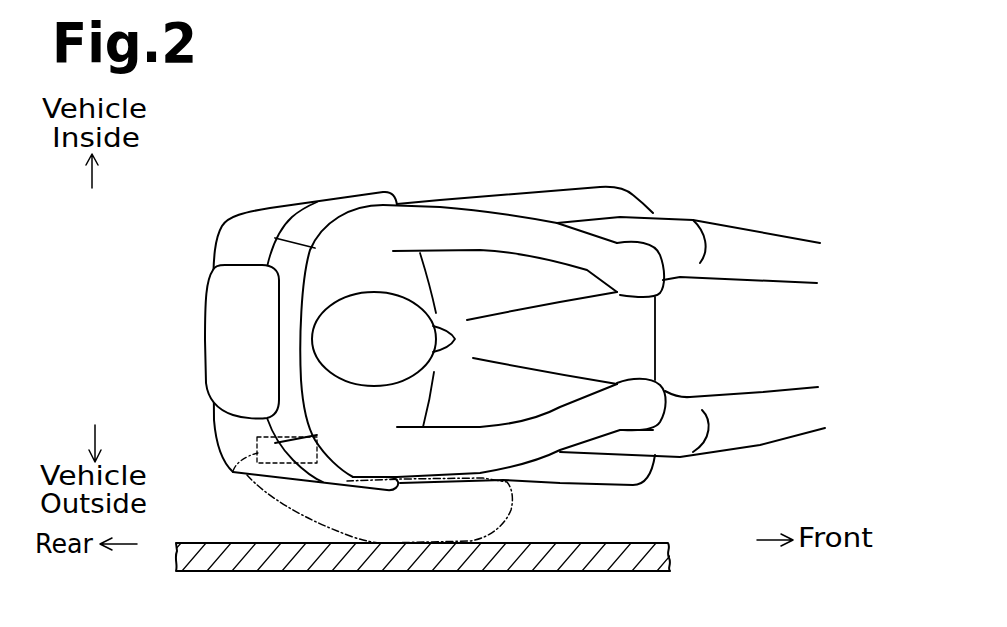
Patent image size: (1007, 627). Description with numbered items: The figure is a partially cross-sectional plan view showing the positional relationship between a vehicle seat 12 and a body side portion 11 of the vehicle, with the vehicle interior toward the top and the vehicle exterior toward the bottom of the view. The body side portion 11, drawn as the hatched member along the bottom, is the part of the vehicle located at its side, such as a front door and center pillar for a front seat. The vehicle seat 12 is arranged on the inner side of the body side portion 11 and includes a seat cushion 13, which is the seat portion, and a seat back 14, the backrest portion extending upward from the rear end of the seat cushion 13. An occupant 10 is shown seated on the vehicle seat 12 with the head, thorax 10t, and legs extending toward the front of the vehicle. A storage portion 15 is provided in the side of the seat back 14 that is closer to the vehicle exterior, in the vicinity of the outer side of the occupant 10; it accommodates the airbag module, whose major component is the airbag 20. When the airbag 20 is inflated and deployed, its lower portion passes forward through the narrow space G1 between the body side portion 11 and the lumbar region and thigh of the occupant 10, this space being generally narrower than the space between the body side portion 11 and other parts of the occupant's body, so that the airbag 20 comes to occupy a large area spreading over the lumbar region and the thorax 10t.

The occupant 10 is at (300, 313).
The thorax 10t is at (433, 387).
The body side portion 11 is at (640, 543).
The vehicle seat 12 is at (213, 413).
The seat cushion 13 is at (655, 333).
The seat back 14 is at (225, 342).
The storage portion 15 is at (233, 475).
The airbag 20 is at (423, 509).
The space G1 is at (379, 509).